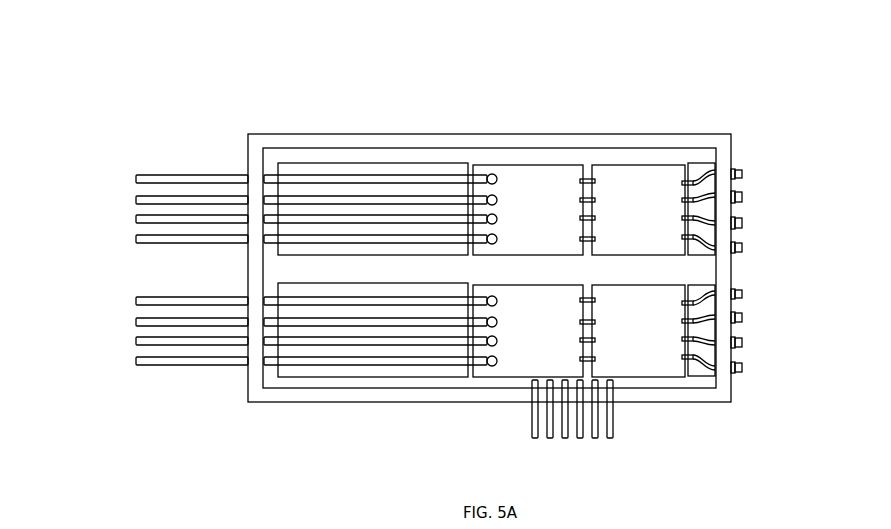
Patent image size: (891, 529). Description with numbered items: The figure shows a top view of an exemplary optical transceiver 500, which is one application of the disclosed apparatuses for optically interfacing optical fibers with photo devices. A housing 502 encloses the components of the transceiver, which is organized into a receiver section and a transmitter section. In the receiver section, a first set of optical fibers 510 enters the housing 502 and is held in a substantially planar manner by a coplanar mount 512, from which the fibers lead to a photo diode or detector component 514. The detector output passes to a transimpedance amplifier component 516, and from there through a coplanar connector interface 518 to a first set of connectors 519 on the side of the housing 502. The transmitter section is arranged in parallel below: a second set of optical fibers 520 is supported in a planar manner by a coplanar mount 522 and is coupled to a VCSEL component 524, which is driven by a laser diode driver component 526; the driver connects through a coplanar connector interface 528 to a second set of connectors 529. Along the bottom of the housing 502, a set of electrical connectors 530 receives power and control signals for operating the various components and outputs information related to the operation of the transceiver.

The optical transceiver 500 is at (768, 103).
The housing 502 is at (279, 134).
The first set of optical fibers 510 is at (127, 175).
The coplanar mount 512 is at (403, 164).
The photo diode component 514 is at (527, 165).
The transimpedance amplifier (TIA) 516 is at (625, 165).
The coplanar connector interface 518 is at (703, 165).
The first set of connectors 519 is at (768, 157).
The second set of optical fibers 520 is at (127, 296).
The transmit fiber array connector 522 is at (355, 377).
The VCSEL component 524 is at (513, 377).
The laser diode driver component 526 is at (622, 377).
The coplanar connector interface 528 is at (702, 376).
The second set of connectors 529 is at (768, 278).
The set of electrical connectors 530 is at (613, 442).